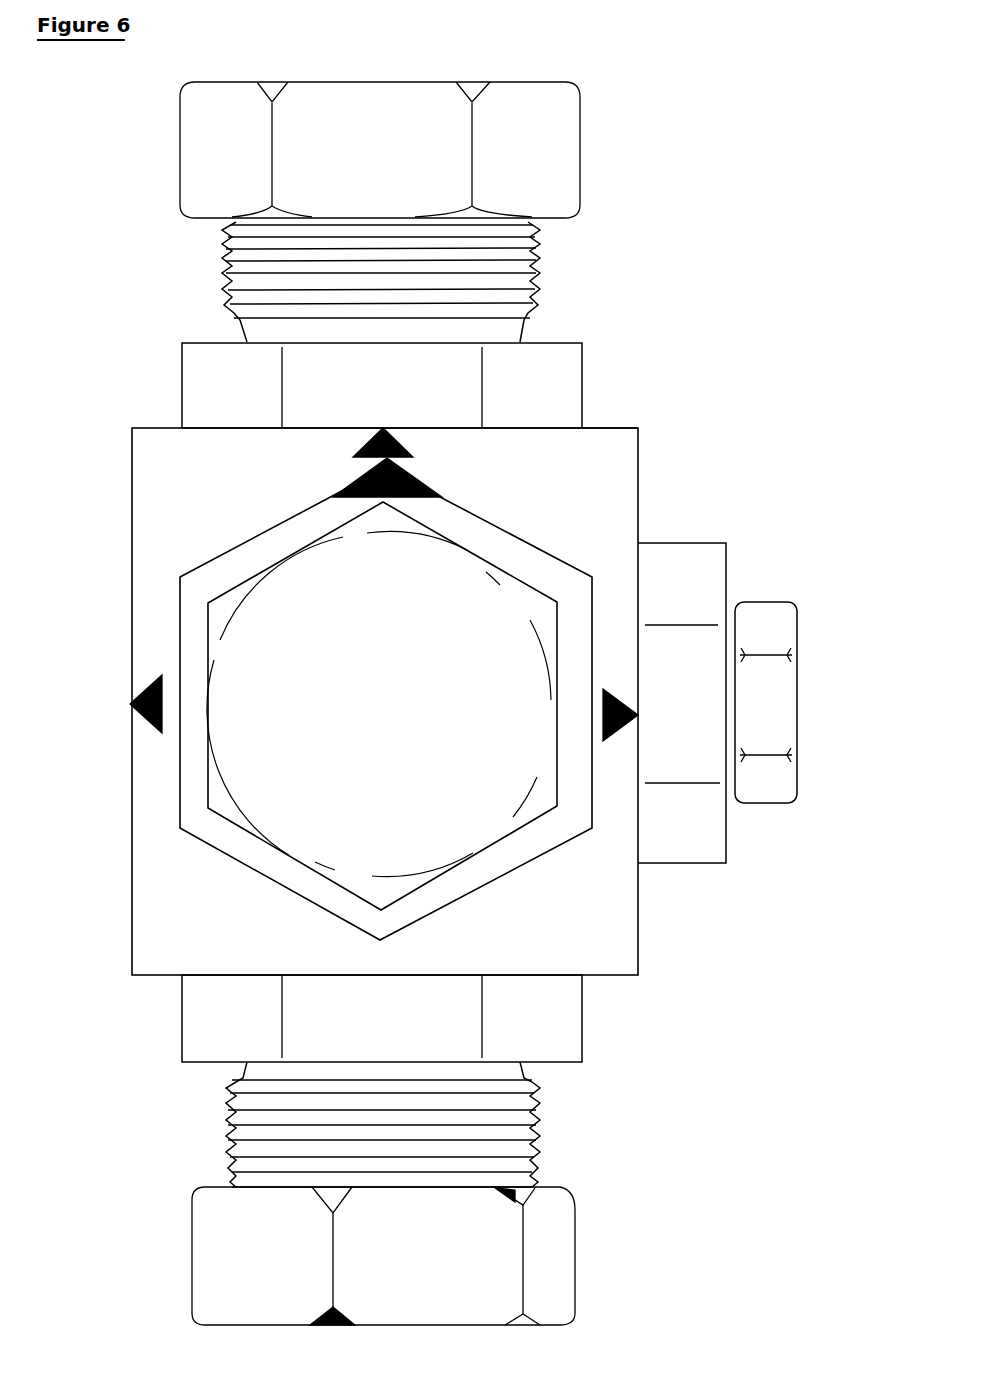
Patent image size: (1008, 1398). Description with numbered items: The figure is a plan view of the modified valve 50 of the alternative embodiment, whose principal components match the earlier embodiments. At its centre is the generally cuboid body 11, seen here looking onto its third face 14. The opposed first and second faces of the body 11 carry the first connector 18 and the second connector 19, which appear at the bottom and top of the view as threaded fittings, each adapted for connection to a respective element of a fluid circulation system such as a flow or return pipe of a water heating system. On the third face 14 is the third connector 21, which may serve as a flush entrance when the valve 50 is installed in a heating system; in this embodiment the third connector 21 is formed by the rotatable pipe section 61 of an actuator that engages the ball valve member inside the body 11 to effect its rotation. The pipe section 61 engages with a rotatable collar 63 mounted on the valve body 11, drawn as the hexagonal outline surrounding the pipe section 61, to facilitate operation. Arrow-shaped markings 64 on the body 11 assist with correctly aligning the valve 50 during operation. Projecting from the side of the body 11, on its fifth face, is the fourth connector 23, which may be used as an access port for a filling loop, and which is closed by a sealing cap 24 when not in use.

The modified valve 50 is at (680, 336).
The body 11 is at (150, 912).
The third face 14 is at (615, 502).
The first connector 18 is at (505, 1128).
The second connector 19 is at (500, 258).
The third connector 21 is at (538, 785).
The fourth connector 23 is at (700, 807).
The sealing cap 24 is at (783, 727).
The rotatable pipe section 61 is at (425, 862).
The rotatable collar 63 is at (190, 798).
The markings 64 is at (378, 437).